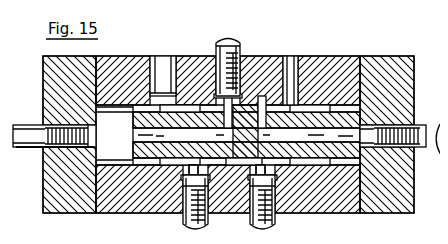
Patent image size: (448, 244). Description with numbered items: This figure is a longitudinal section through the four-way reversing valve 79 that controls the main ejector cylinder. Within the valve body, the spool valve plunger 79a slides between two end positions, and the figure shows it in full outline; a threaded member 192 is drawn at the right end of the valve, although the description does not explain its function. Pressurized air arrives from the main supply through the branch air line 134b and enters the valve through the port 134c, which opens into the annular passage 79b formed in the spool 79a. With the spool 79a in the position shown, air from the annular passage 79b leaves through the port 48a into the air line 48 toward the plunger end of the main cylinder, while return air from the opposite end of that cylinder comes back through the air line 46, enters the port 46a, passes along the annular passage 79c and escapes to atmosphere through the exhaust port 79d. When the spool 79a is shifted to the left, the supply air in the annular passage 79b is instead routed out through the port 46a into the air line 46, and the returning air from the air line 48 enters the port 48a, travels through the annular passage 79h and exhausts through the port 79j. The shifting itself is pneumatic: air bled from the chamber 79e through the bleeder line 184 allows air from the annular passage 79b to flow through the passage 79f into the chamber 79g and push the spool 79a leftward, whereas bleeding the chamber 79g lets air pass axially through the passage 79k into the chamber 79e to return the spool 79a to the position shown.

The four-way reversing valve 79 is at (353, 207).
The spool valve plunger 79a is at (352, 153).
The annular passage 79b is at (252, 162).
The annular passage 79c is at (168, 90).
The exhaust port 79d is at (143, 73).
The chamber 79e is at (122, 127).
The passage 79f is at (254, 111).
The chamber 79g is at (387, 180).
The annular passage 79h is at (311, 99).
The exhaust port 79j is at (288, 93).
The passage 79k is at (220, 116).
The branch air line 134b is at (234, 36).
The port 134c is at (219, 88).
The bleeder line 184 is at (23, 140).
The threaded rod 192 is at (408, 114).
The air line 46 is at (178, 213).
The port 46a is at (185, 163).
The air line 48 is at (267, 212).
The port 48a is at (268, 166).